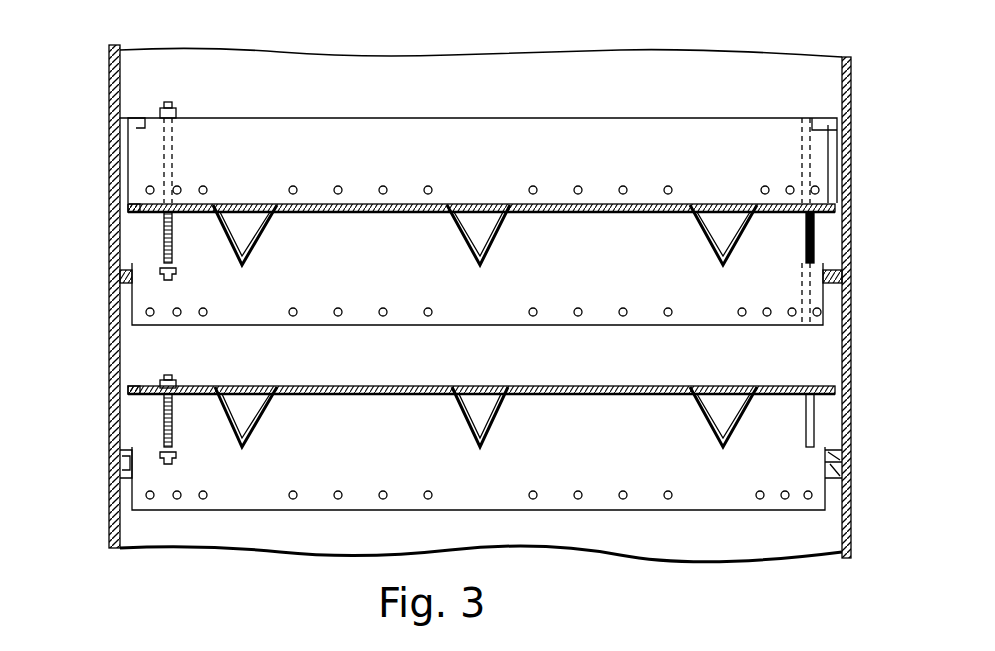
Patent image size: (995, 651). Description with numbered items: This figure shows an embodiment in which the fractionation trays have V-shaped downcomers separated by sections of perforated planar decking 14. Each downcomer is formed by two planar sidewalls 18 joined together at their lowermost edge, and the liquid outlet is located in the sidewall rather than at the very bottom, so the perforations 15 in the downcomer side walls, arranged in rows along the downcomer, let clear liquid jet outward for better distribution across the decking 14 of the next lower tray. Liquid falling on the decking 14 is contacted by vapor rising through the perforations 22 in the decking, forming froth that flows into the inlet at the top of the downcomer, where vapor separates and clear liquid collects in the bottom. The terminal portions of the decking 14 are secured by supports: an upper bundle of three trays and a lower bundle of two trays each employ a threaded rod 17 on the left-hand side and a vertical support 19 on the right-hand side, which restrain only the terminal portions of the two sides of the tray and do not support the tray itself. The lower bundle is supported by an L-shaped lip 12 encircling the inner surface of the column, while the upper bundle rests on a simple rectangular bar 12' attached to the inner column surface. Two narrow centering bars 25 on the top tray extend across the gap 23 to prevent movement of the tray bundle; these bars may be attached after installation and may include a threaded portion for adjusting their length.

The L-shaped lip 12 is at (480, 473).
The rectangular bar 12' is at (514, 296).
The perforated planar decking 14 is at (481, 296).
The perforations in the downcomer side walls 15 is at (293, 178).
The threaded rod 17 is at (165, 232).
The planar sidewall 18 is at (500, 168).
The vertical support brace 19 is at (800, 152).
The perforations in the decking 22 is at (400, 214).
The gap 23 is at (127, 203).
The centering bar 25 is at (121, 120).